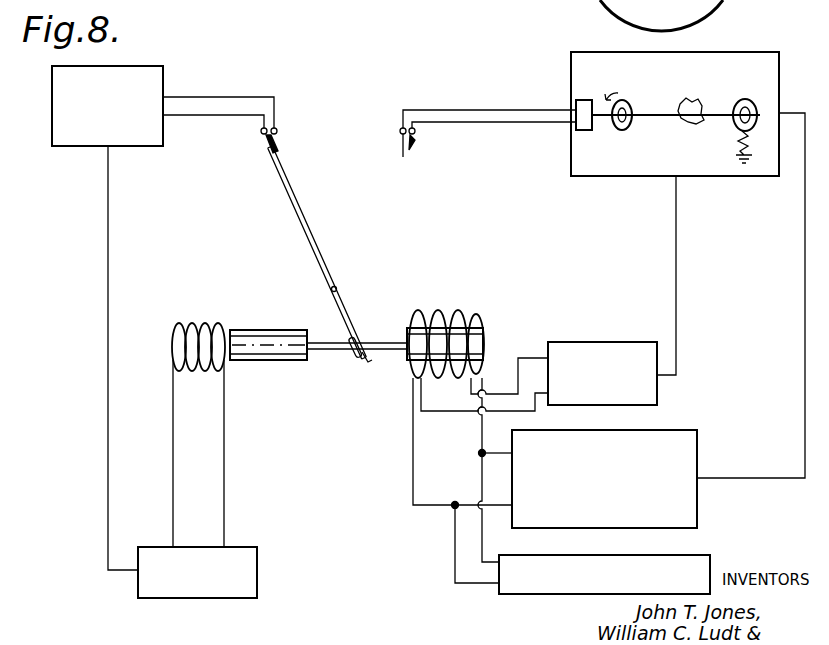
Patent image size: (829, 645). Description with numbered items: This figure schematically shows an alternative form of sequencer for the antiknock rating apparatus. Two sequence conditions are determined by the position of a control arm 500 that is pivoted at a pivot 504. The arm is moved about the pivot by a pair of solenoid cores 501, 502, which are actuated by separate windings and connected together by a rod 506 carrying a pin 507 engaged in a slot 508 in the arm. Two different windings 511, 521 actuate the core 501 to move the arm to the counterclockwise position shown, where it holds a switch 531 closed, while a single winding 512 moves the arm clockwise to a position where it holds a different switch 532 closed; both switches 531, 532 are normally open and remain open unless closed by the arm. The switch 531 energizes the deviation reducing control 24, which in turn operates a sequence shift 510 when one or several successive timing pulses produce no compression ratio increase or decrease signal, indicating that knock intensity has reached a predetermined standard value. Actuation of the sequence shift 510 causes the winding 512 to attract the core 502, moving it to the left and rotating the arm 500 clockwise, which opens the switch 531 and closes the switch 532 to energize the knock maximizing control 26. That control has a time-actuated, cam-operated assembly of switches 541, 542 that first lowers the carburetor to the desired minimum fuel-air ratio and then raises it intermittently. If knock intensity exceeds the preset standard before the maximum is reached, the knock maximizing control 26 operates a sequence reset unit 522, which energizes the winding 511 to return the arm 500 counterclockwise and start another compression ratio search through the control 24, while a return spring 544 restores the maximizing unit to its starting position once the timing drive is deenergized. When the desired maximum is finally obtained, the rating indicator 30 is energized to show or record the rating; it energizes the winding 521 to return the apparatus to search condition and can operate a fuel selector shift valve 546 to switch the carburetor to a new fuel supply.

The deviation reducing control 24 is at (73, 148).
The knock maximizing control 26 is at (676, 132).
The rating indicator 30 is at (685, 438).
The control arm 500 is at (312, 246).
The solenoid core 501 is at (486, 350).
The solenoid core 502 is at (248, 332).
The pivot 504 is at (338, 291).
The rod 506 is at (376, 341).
The pin 507 is at (350, 356).
The slot 508 is at (368, 362).
The sequence shift 510 is at (257, 572).
The winding 511 is at (472, 320).
The winding 512 is at (172, 346).
The winding 521 is at (437, 318).
The sequence reset unit 522 is at (628, 350).
The switch 531 is at (278, 131).
The switch 532 is at (399, 128).
The switch 541 is at (622, 146).
The switch 542 is at (693, 128).
The return spring 544 is at (757, 131).
The fuel selector shift valve 546 is at (706, 556).